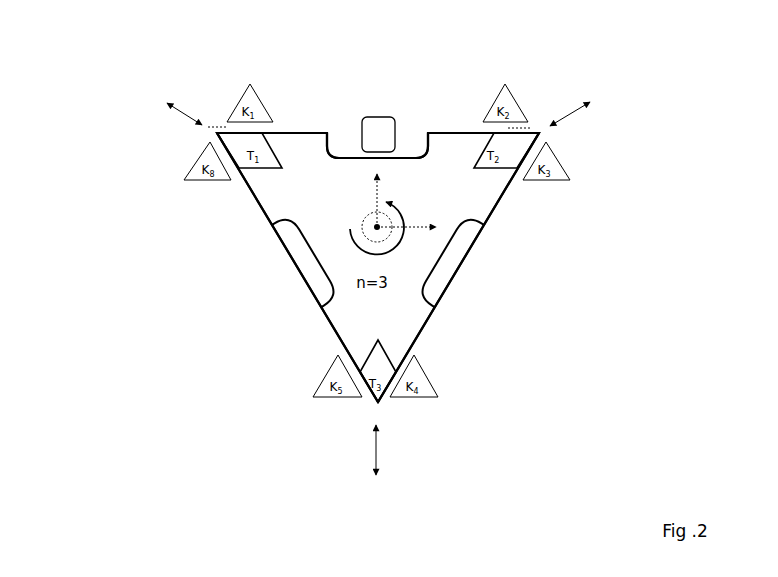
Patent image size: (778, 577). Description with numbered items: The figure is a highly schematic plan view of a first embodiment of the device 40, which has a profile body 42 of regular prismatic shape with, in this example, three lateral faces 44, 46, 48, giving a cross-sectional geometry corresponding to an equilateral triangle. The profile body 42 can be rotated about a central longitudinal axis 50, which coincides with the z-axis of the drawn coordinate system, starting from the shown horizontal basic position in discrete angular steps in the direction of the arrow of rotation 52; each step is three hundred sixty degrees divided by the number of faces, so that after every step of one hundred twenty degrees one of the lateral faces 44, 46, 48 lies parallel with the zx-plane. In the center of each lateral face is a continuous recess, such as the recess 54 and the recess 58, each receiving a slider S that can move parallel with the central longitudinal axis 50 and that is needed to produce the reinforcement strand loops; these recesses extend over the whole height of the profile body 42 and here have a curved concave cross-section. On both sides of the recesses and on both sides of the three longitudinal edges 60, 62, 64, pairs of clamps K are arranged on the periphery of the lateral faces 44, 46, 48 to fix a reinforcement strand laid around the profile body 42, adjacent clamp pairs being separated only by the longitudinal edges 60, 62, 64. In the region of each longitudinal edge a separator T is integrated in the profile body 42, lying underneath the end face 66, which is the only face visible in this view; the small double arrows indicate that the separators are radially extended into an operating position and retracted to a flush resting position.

The device 40 is at (555, 62).
The profile body 42 is at (326, 197).
The lateral face 44 is at (292, 133).
The lateral face 46 is at (499, 200).
The lateral face 48 is at (255, 198).
The central longitudinal axis 50 is at (377, 227).
The arrow of rotation 52 is at (400, 214).
The recess 54 is at (347, 148).
The recess 58 is at (305, 248).
The longitudinal edge 60 is at (217, 133).
The longitudinal edge 62 is at (539, 133).
The longitudinal edge 64 is at (378, 402).
The end face 66 is at (390, 312).